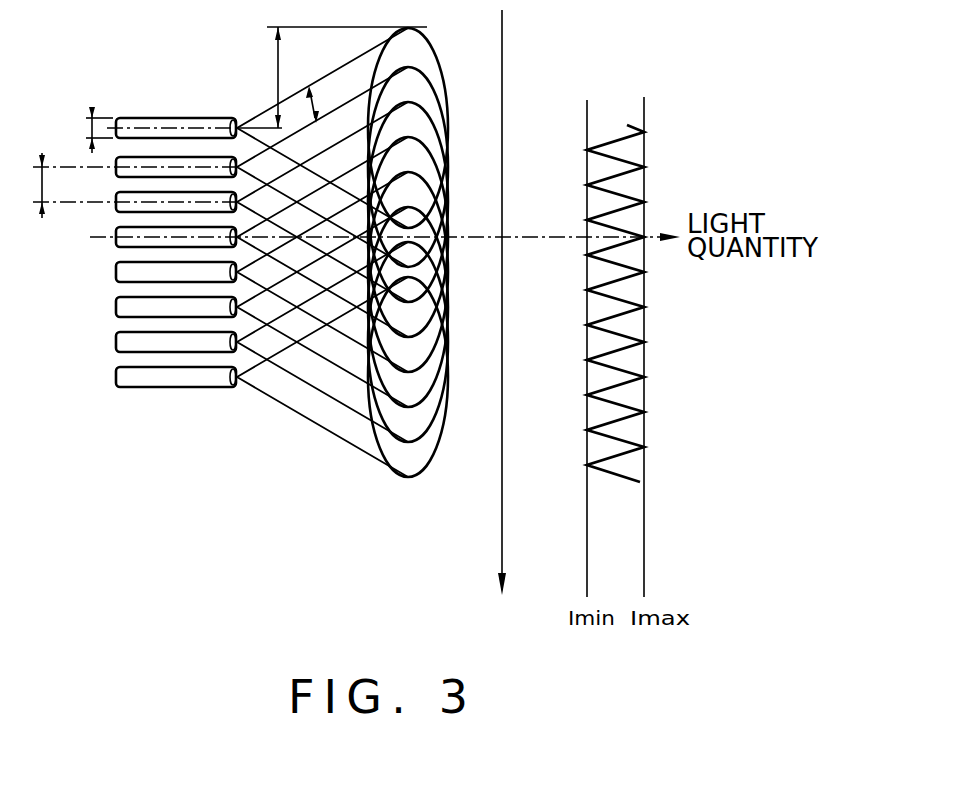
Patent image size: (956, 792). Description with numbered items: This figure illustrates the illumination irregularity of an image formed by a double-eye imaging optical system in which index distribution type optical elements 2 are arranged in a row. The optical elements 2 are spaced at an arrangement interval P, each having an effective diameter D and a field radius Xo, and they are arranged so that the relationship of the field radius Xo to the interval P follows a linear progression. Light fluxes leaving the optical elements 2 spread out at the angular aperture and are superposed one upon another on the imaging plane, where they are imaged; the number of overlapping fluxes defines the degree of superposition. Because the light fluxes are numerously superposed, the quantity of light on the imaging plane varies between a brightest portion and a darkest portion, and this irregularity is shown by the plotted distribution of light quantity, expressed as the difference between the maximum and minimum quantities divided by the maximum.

The optical elements 2 is at (175, 163).
The effective diameter D is at (88, 130).
The arrangement interval P is at (29, 185).
The field radius Xo is at (332, 77).